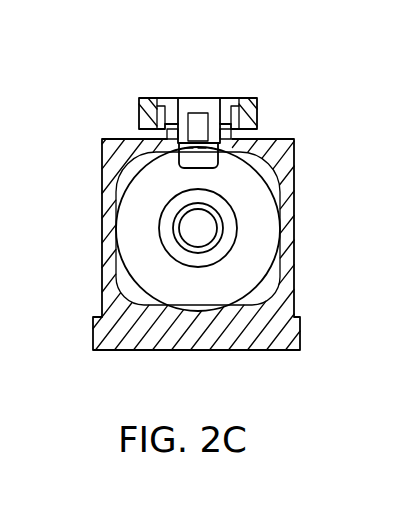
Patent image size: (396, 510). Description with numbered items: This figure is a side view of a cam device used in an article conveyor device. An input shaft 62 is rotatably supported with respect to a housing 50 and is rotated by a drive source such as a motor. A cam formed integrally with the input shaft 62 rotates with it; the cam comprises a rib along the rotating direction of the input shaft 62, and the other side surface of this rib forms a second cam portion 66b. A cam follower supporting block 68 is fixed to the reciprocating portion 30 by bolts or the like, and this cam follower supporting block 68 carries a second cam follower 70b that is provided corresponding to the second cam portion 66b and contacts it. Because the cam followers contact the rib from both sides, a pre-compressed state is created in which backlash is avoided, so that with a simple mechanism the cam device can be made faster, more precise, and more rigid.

The housing 50 is at (133, 340).
The input shaft 62 is at (208, 228).
The second cam portion 66b is at (262, 196).
The second cam follower 70b is at (222, 160).
The reciprocating portion 30 is at (250, 107).
The cam follower supporting block 68 is at (202, 103).